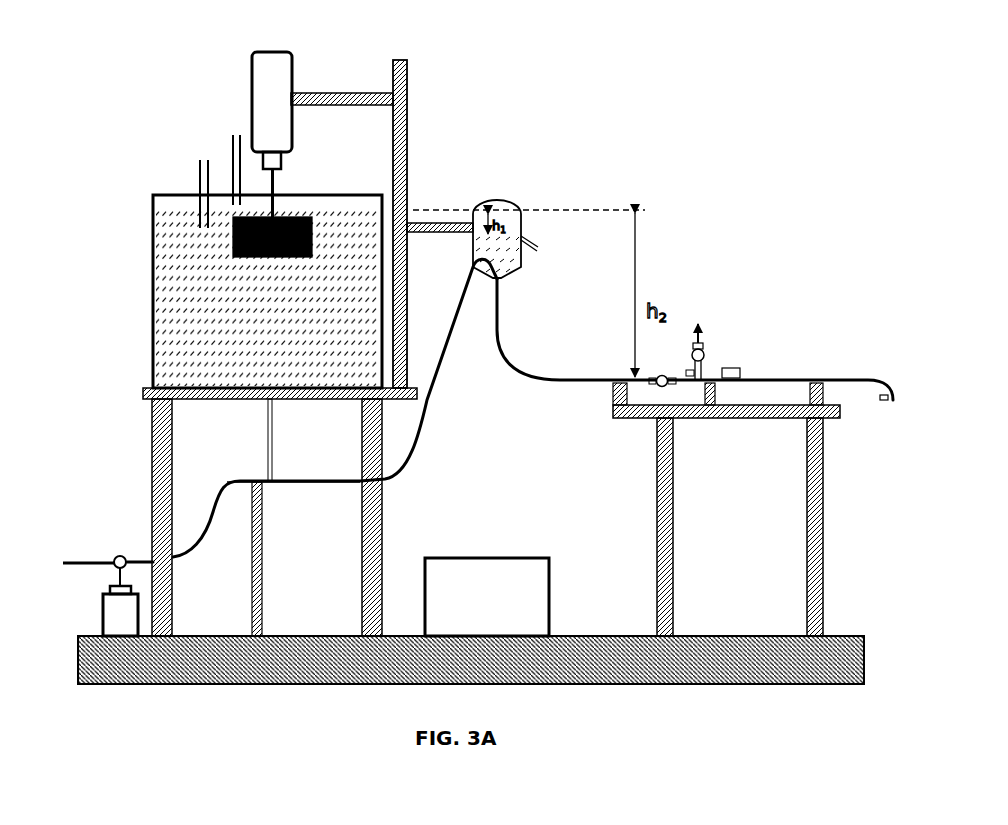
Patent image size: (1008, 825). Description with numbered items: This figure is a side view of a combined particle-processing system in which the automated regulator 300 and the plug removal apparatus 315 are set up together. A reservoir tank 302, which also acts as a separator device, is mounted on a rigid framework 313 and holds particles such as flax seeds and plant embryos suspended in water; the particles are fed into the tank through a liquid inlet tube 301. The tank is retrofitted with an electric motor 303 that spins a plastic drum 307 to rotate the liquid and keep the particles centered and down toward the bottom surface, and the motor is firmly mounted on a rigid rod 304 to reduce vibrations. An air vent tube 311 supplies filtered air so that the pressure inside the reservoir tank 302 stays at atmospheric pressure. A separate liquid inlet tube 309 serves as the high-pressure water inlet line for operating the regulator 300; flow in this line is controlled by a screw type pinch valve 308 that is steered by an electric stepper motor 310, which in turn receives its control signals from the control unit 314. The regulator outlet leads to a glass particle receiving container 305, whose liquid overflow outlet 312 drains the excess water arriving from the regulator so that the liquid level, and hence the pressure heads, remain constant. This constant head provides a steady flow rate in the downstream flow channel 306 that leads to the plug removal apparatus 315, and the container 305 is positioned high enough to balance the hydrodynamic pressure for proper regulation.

The automated regulator 300 is at (312, 410).
The liquid inlet tube 301 is at (193, 160).
The reservoir tank 302 is at (150, 283).
The electric motor 303 is at (289, 49).
The rigid rod 304 is at (410, 129).
The particle receiving container 305 is at (516, 196).
The downstream flow channel 306 is at (562, 372).
The plastic drum 307 is at (297, 212).
The screw type pinch valve 308 is at (116, 553).
The liquid inlet tube 309 is at (80, 561).
The electric stepper motor 310 is at (100, 611).
The air vent tube 311 is at (229, 133).
The liquid overflow outlet 312 is at (540, 236).
The rigid framework 313 is at (385, 571).
The control unit 314 is at (487, 597).
The plug removal apparatus 315 is at (726, 480).